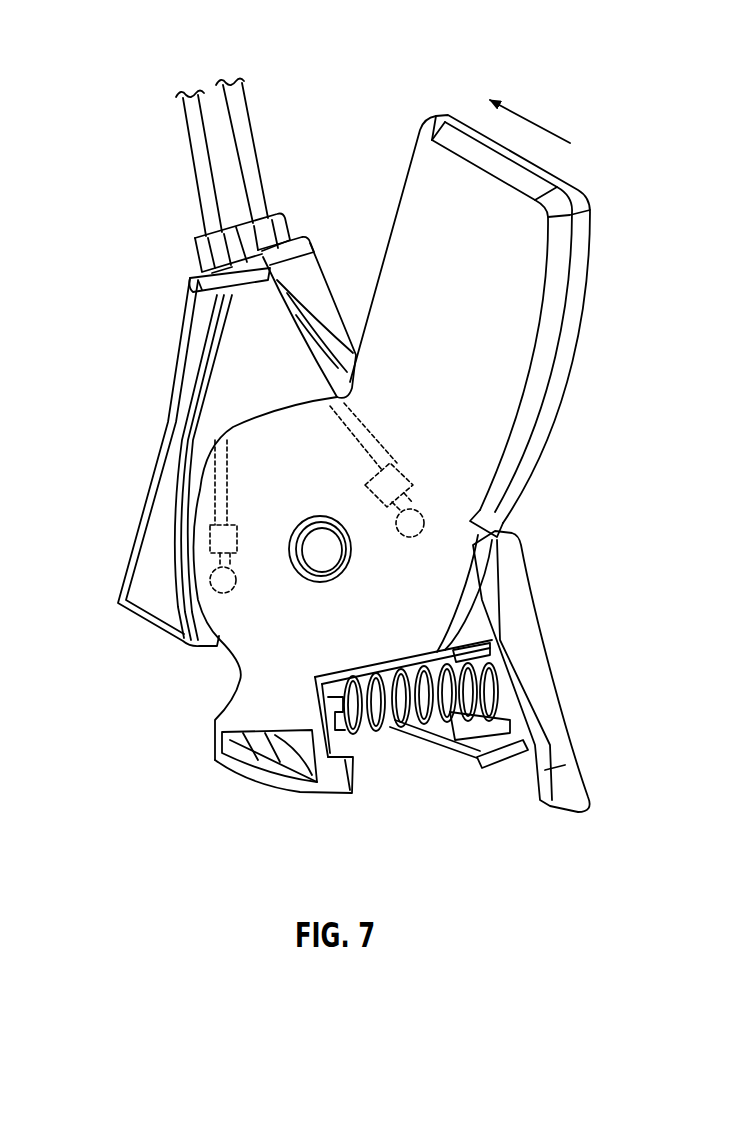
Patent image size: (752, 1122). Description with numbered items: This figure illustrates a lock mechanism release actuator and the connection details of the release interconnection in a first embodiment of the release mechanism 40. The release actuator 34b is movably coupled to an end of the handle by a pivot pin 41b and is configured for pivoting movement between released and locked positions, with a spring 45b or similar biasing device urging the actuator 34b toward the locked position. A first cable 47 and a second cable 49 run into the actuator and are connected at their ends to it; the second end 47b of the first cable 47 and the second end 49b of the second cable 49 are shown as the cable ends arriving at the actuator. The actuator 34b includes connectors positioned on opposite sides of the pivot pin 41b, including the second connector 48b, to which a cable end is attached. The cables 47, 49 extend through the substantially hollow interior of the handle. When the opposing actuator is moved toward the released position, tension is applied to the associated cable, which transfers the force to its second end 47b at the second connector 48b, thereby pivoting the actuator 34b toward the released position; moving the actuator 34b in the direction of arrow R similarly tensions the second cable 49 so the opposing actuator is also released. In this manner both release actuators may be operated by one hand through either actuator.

The release actuator 34b is at (512, 72).
The release mechanism 40 is at (105, 302).
The pivot pin 41b is at (308, 565).
The spring 45b is at (381, 745).
The first cable 47 is at (250, 142).
The second end of first cable 47b is at (370, 440).
The second connector 48b is at (207, 572).
The second cable 49 is at (193, 142).
The second end of second cable 49b is at (217, 506).